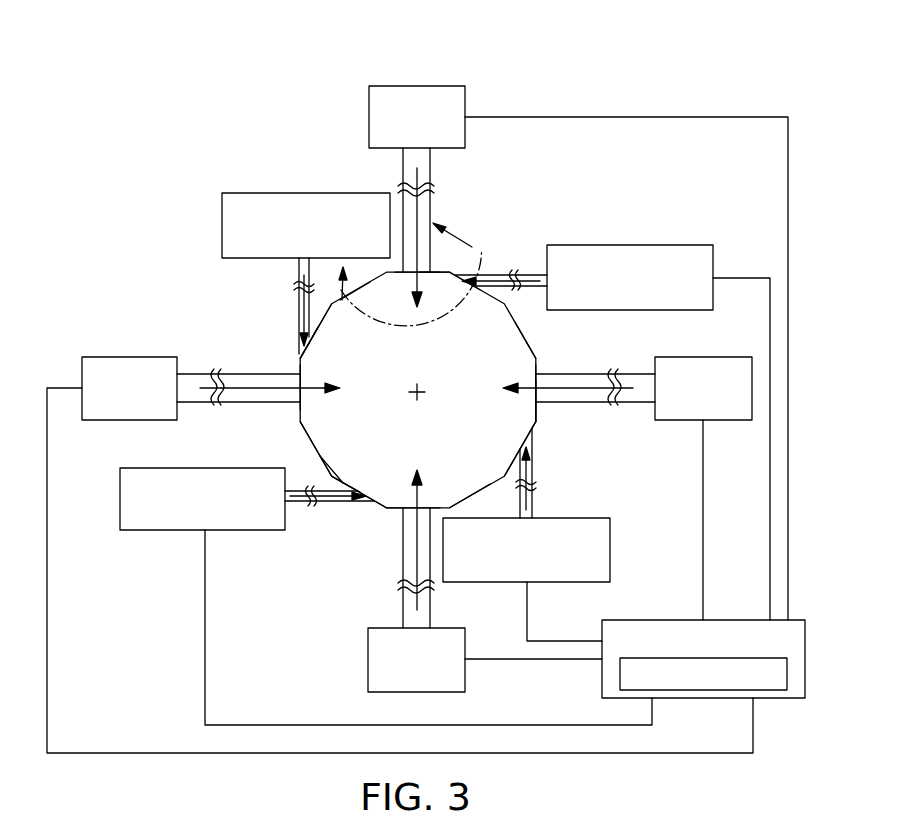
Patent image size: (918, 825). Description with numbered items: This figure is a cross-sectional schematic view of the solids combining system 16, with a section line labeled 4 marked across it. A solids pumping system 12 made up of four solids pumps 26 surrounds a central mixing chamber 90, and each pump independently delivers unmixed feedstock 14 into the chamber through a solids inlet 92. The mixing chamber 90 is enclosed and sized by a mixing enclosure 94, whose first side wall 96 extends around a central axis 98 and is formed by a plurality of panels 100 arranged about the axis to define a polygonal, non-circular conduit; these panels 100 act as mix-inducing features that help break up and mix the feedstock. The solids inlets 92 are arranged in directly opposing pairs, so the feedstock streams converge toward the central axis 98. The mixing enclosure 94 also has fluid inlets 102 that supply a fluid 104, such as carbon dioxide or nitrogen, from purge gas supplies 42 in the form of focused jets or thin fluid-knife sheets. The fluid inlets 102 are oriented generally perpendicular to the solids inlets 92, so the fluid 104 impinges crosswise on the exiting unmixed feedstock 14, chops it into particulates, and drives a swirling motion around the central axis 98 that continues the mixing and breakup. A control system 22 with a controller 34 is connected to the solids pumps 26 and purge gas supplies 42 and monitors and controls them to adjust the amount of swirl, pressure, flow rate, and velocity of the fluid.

The solids combining system 16 is at (115, 110).
The solids pumping system 12 is at (393, 371).
The solids pump 26 is at (417, 86).
The unmixed feedstock 14 is at (432, 180).
The purge gas supply 42 is at (305, 193).
The control system 22 is at (442, 435).
The controller 34 is at (790, 673).
The mixing chamber 90 is at (381, 407).
The solids inlet 92 is at (437, 269).
The mixing enclosure 94 is at (304, 449).
The first side wall 96 is at (323, 463).
The central axis 98 is at (419, 391).
The panel 100 is at (357, 285).
The fluid inlet 102 is at (465, 273).
The fluid 104 is at (298, 297).
The section line 4- 4 is at (404, 274).